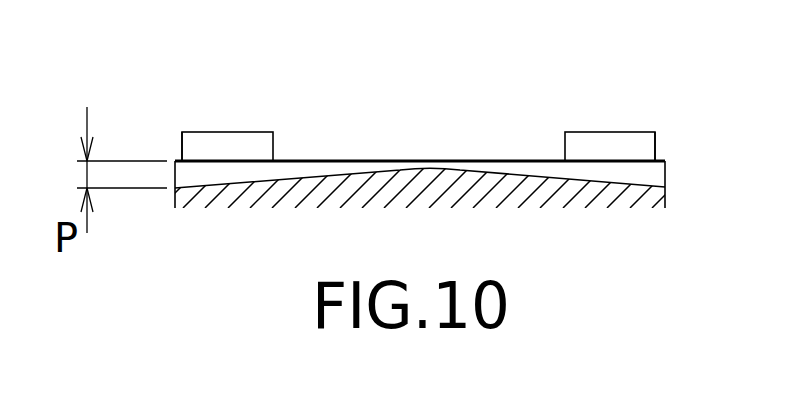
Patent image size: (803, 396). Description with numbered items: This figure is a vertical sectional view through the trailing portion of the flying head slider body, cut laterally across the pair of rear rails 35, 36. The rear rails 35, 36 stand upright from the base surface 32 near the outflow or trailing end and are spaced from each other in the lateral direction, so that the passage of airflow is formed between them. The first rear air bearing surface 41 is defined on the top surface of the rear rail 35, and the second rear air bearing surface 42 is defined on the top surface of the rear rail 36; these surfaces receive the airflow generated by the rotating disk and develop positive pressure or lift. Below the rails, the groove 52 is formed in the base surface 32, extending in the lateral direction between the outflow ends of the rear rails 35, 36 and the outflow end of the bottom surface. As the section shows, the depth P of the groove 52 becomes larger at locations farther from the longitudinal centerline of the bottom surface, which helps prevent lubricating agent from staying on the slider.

The base surface 32 is at (412, 161).
The rear rail 35 is at (656, 148).
The rear rail 36 is at (182, 148).
The first rear air bearing surface 41 is at (600, 132).
The second rear air bearing surface 42 is at (232, 132).
The groove 52 is at (437, 172).